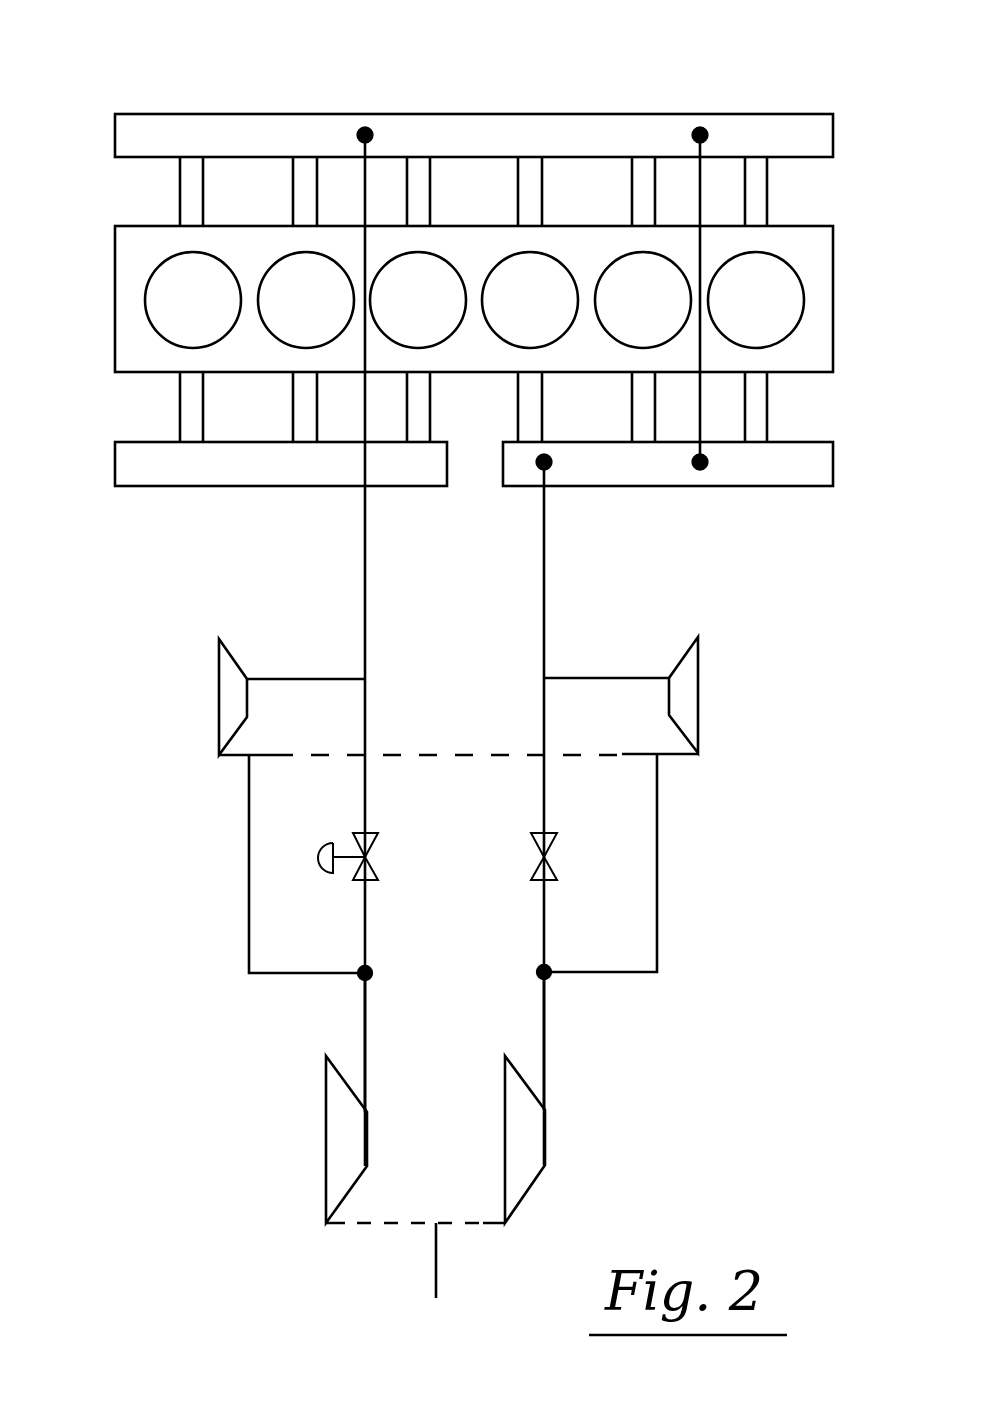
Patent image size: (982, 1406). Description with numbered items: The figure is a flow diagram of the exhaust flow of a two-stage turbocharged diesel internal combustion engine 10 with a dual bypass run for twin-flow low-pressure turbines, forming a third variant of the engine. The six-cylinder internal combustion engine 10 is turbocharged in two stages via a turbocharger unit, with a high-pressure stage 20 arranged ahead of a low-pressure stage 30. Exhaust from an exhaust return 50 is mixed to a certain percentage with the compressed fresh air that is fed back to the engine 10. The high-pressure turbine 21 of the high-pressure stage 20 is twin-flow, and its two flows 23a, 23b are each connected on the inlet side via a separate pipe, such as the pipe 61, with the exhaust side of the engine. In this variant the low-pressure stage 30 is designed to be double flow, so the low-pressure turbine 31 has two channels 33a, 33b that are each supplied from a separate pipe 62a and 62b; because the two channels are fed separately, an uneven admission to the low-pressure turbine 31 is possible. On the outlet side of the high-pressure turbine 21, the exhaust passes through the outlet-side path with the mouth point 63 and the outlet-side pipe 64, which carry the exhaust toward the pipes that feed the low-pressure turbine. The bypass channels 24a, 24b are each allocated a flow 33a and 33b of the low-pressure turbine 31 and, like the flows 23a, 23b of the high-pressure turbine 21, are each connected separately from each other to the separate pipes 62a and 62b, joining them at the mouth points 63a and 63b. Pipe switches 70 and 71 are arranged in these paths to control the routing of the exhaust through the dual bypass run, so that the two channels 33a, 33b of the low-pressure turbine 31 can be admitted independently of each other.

The internal combustion engine 10 is at (802, 53).
The exhaust return with EGR pipe switch 50 is at (363, 195).
The pipe 61 is at (363, 539).
The high-pressure stage 20 is at (435, 682).
The high-pressure turbine 21 is at (194, 740).
The flow 23a is at (223, 658).
The flow 23b is at (695, 655).
The bypass channel 24a is at (367, 707).
The bypass channel 24b is at (543, 721).
The mouth point 63 is at (249, 827).
The outlet-side pipe 64 is at (658, 808).
The pipe switch 70 is at (377, 880).
The pipe switch 71 is at (532, 842).
The mouth point 63a is at (373, 968).
The mouth point 63b is at (538, 977).
The pipe 62a is at (365, 1033).
The pipe 62b is at (546, 1040).
The low-pressure stage 30 is at (397, 1177).
The low-pressure turbine 31 is at (264, 1115).
The flow 33a is at (332, 1160).
The flow 33b is at (537, 1152).